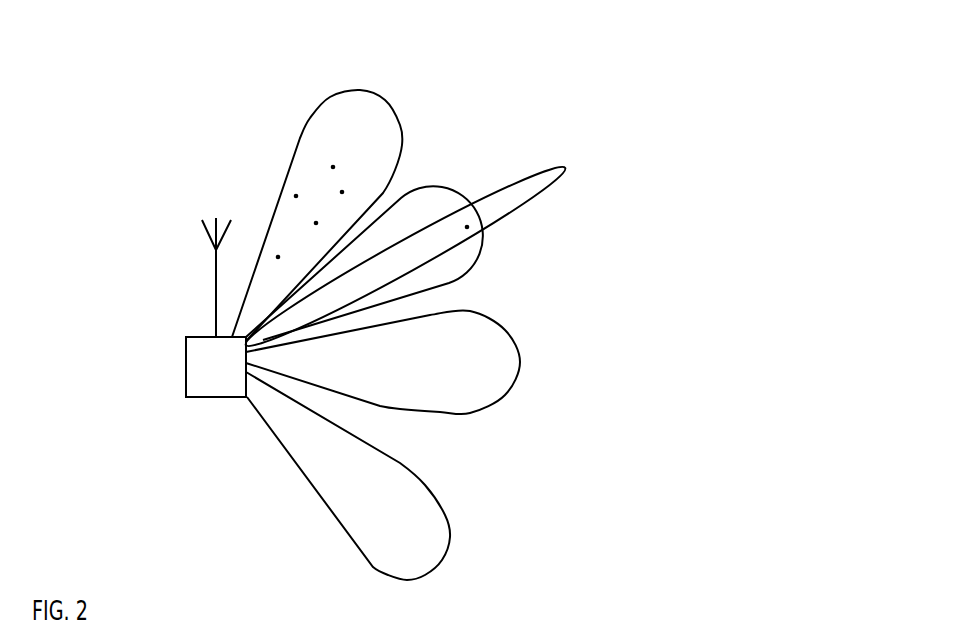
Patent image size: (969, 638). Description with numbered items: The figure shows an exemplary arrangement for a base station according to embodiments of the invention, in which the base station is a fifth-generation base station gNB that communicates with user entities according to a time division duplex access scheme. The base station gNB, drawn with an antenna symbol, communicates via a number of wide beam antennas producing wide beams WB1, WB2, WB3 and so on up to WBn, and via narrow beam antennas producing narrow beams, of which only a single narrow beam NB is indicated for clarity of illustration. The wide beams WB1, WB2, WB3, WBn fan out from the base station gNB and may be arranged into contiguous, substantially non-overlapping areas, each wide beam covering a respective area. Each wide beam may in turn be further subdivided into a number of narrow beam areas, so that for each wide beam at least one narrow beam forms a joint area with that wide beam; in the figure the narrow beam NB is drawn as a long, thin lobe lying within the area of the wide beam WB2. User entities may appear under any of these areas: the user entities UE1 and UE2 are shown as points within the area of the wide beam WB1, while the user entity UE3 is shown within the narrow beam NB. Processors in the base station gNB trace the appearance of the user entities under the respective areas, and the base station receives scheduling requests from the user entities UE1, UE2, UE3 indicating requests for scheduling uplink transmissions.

The base station gNB is at (216, 307).
The wide beam WB1 is at (393, 102).
The wide beam WB2 is at (450, 188).
The wide beam WB3 is at (520, 362).
The wide beam WBn is at (457, 558).
The narrow beam NB is at (565, 168).
The user entity UE1 is at (365, 149).
The user entity UE2 is at (393, 182).
The user entity UE3 is at (467, 227).